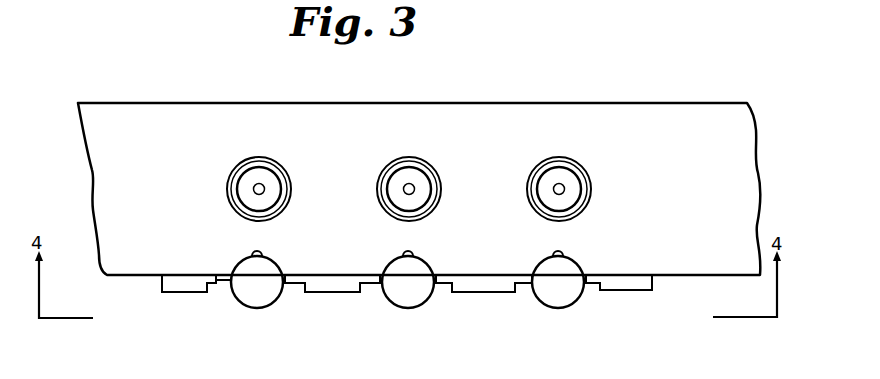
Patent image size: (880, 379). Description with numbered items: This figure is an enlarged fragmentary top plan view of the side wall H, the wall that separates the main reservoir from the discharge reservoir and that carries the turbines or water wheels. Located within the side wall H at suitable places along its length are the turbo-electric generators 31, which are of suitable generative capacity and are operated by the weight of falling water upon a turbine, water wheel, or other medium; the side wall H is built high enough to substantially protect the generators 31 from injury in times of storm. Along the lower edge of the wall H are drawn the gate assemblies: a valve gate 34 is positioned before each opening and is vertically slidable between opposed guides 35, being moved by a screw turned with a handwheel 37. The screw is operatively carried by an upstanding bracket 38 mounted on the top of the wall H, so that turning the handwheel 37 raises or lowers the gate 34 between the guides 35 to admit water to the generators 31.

The side wall H is at (541, 126).
The turbo-electric generator 31 is at (262, 184).
The valve gate 34 is at (290, 281).
The guide 35 is at (199, 292).
The handwheel 37 is at (406, 292).
The upstanding bracket 38 is at (409, 254).